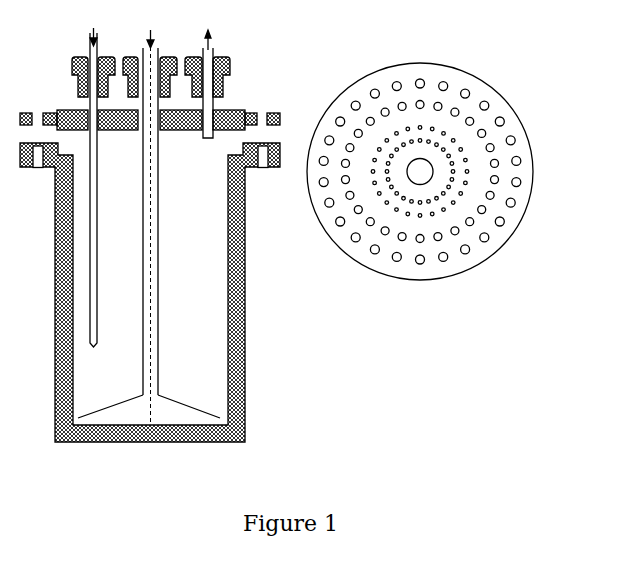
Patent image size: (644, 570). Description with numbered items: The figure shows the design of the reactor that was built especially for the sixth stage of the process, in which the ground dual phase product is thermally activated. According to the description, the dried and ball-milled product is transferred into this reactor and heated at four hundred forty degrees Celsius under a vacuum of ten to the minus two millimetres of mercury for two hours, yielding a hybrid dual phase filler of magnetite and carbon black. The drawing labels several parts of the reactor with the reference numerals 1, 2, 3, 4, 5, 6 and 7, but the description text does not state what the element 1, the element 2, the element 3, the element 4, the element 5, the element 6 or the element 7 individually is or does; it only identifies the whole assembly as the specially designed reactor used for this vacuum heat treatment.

The reactor vessel body 1 is at (248, 278).
The cover plate 2 is at (228, 110).
The sealing plugs 3 is at (106, 58).
The central gas inlet tube 4 is at (154, 50).
The gas outlet tube 5 is at (211, 50).
The thermocouple tube 6 is at (96, 52).
The gas distribution plate 7 is at (183, 405).